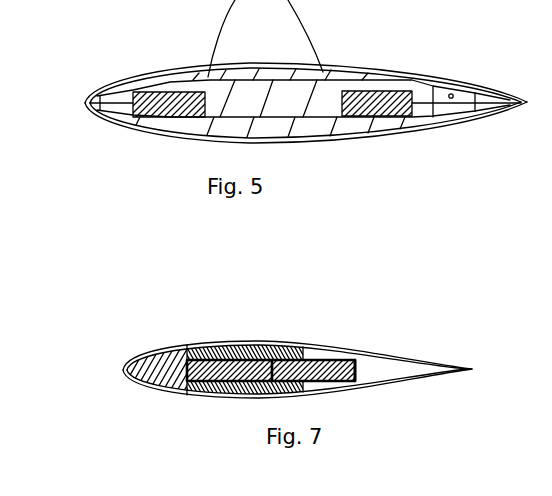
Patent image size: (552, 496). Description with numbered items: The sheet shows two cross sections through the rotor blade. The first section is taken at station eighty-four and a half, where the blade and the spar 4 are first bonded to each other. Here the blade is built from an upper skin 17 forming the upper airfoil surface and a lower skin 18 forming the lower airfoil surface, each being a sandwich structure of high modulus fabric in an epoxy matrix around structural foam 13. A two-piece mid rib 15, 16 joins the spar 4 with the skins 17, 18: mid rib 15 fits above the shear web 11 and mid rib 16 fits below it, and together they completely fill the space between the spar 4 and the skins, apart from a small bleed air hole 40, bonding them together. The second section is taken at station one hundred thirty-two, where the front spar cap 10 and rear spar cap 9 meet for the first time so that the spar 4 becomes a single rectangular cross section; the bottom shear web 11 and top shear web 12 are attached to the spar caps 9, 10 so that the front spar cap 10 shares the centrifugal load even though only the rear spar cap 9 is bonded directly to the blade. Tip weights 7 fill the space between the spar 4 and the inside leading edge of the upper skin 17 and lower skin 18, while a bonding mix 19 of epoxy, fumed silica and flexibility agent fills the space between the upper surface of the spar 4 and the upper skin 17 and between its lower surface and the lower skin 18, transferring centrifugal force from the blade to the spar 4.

In FIG. 7, the spar 4 is at (242, 352).
In FIG. 7, the tip weights 7 is at (148, 360).
In FIG. 5, the rear spar cap 9 is at (357, 97).
In FIG. 7, the rear spar cap 9 is at (370, 358).
In FIG. 5, the front spar cap 10 is at (167, 100).
In FIG. 7, the front spar cap 10 is at (200, 385).
In FIG. 7, the bottom shear web 11 is at (322, 383).
In FIG. 7, the top shear web 12 is at (317, 355).
In FIG. 5, the structural foam 13 is at (292, 70).
In FIG. 5, the mid rib 15 is at (193, 95).
In FIG. 5, the mid rib 16 is at (188, 122).
In FIG. 5, the upper skin 17 is at (240, 63).
In FIG. 7, the upper skin 17 is at (402, 358).
In FIG. 5, the lower skin 18 is at (131, 133).
In FIG. 7, the lower skin 18 is at (387, 387).
In FIG. 7, the bonding mix 19 is at (208, 350).
In FIG. 5, the bleed air hole 40 is at (451, 93).